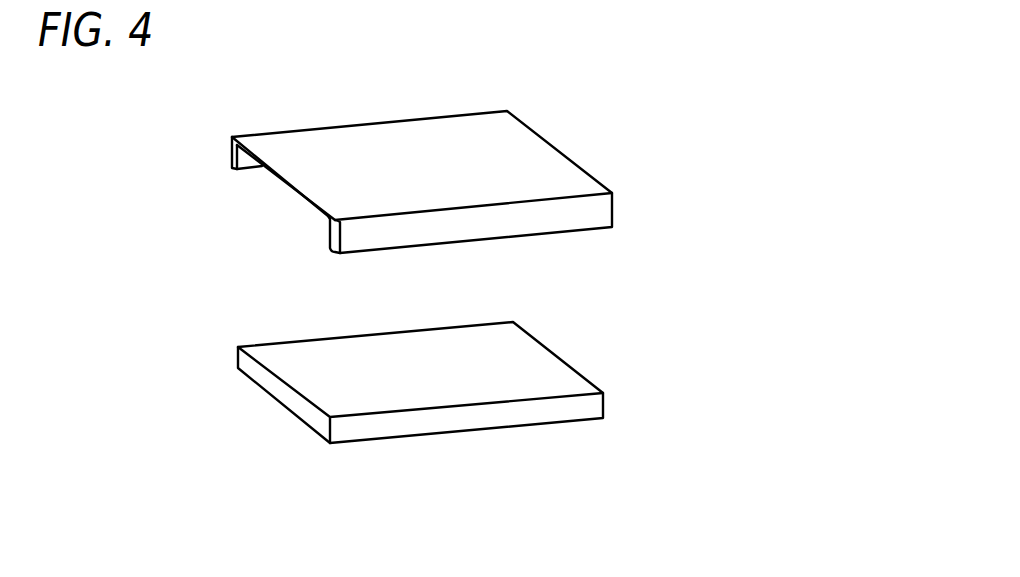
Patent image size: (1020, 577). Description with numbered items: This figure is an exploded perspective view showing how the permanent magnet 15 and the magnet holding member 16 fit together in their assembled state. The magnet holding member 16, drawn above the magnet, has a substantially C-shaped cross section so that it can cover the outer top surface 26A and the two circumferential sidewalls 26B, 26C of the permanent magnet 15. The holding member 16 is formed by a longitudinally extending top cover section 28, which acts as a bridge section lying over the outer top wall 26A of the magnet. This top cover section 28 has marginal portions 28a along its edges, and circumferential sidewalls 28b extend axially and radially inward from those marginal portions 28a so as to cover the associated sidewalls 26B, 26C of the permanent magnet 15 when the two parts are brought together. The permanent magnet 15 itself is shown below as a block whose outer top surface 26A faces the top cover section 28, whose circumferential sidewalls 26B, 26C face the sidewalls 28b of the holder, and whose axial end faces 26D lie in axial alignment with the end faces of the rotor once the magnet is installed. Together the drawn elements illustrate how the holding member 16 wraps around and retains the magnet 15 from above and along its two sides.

The magnet holding member 16 is at (580, 135).
The top cover section 28 is at (412, 153).
The marginal portions 28a is at (340, 135).
The circumferential sidewalls 28b is at (232, 149).
The permanent magnet 15 is at (582, 345).
The outer top surface 26A is at (342, 357).
The circumferential sidewall 26B is at (497, 415).
The circumferential sidewall 26C is at (237, 357).
The axial end faces 26D is at (293, 403).